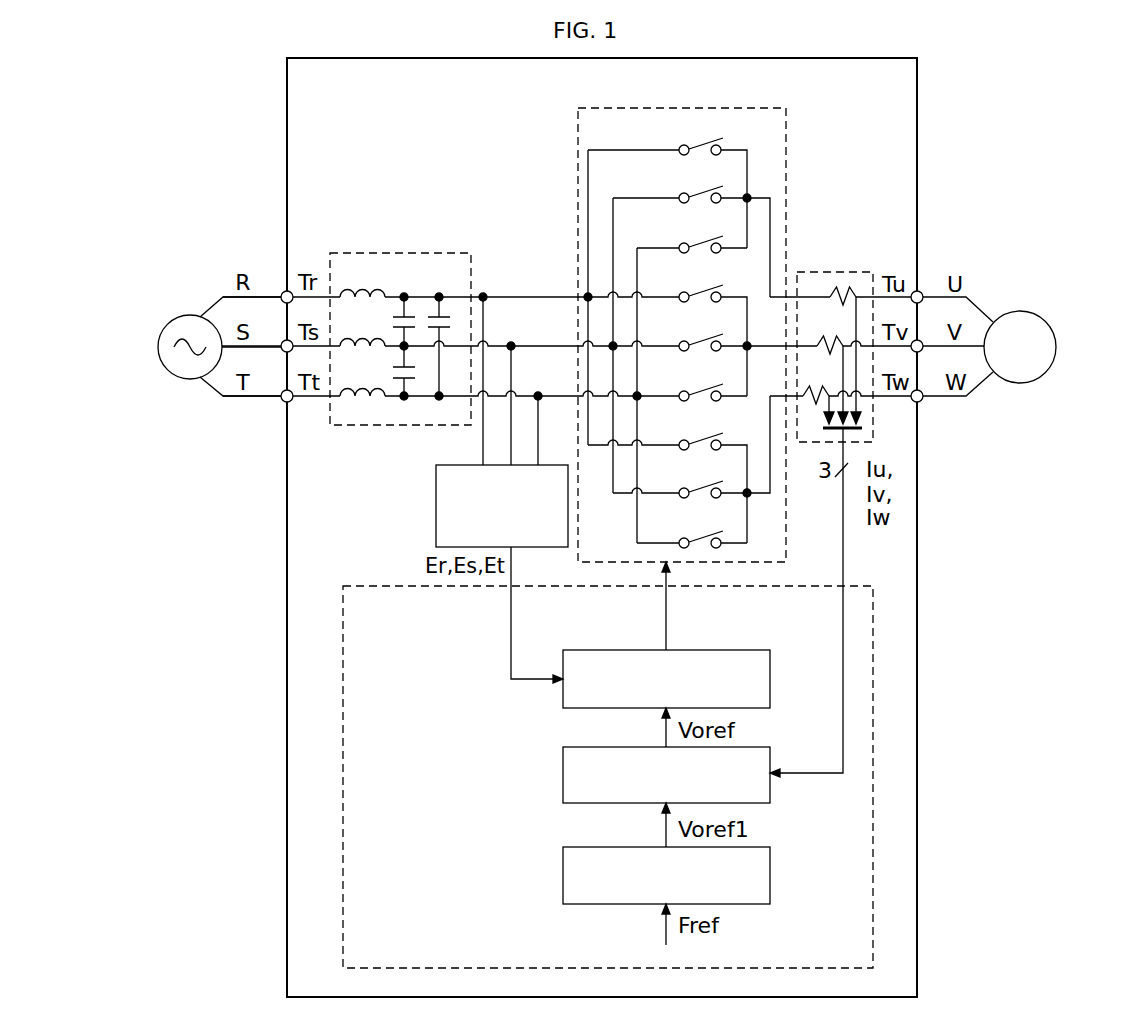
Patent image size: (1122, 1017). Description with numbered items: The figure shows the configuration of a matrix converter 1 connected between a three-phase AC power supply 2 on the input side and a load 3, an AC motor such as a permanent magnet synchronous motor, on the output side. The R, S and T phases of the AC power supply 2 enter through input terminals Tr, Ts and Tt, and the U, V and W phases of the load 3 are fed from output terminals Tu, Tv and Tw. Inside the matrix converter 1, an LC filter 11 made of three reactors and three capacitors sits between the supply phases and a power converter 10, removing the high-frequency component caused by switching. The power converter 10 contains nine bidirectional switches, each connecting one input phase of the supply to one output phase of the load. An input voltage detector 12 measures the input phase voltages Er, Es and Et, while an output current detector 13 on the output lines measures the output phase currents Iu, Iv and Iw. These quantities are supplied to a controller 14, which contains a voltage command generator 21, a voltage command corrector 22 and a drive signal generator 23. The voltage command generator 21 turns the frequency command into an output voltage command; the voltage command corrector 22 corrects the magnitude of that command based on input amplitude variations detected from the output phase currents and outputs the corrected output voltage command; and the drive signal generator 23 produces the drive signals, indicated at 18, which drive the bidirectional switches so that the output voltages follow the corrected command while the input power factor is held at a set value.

The matrix converter 1 is at (917, 108).
The three-phase AC power supply 2 is at (190, 315).
The load 3 is at (1020, 311).
The power converter 10 is at (786, 140).
The LC filter 11 is at (400, 253).
The input voltage detector 12 is at (436, 505).
The output current detector 13 is at (835, 271).
The controller 14 is at (372, 585).
The drive signals S1a-S9a, S1b-S9b 18 is at (669, 620).
The voltage command generator 21 is at (612, 847).
The voltage command corrector 22 is at (610, 747).
The drive signal generator 23 is at (610, 650).